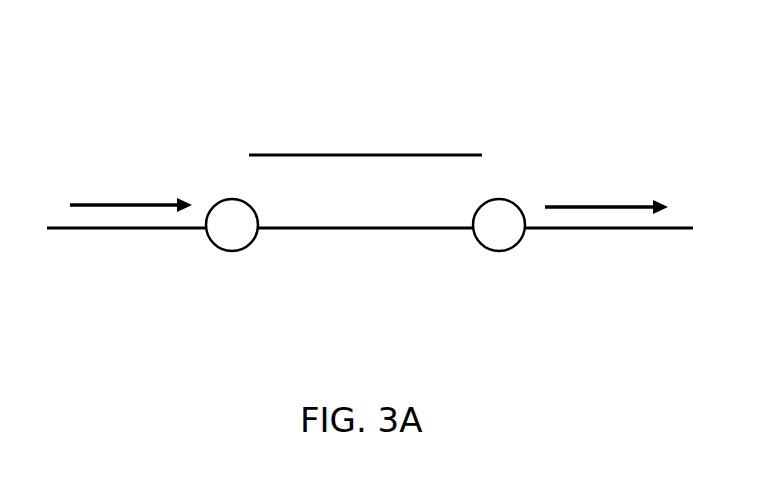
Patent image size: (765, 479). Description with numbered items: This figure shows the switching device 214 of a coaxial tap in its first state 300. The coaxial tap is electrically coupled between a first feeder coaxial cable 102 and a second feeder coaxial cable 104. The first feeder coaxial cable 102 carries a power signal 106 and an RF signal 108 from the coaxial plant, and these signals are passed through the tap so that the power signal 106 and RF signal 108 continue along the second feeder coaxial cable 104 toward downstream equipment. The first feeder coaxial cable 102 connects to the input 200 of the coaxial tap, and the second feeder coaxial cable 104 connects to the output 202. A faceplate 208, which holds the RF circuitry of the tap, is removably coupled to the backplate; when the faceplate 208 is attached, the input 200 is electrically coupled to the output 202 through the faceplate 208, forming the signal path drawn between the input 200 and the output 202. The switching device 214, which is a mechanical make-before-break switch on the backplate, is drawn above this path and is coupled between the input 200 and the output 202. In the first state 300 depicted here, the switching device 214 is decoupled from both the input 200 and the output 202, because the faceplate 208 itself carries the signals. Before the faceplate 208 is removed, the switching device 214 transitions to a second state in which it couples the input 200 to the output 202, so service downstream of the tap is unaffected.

The first state 300 is at (540, 96).
The switching device 214 is at (363, 153).
The first feeder coaxial cable 102 is at (130, 232).
The second feeder coaxial cable 104 is at (582, 228).
The power signal 106 is at (113, 202).
The RF signal 108 is at (363, 206).
The input 200 is at (233, 252).
The output 202 is at (497, 252).
The faceplate 208 is at (355, 228).